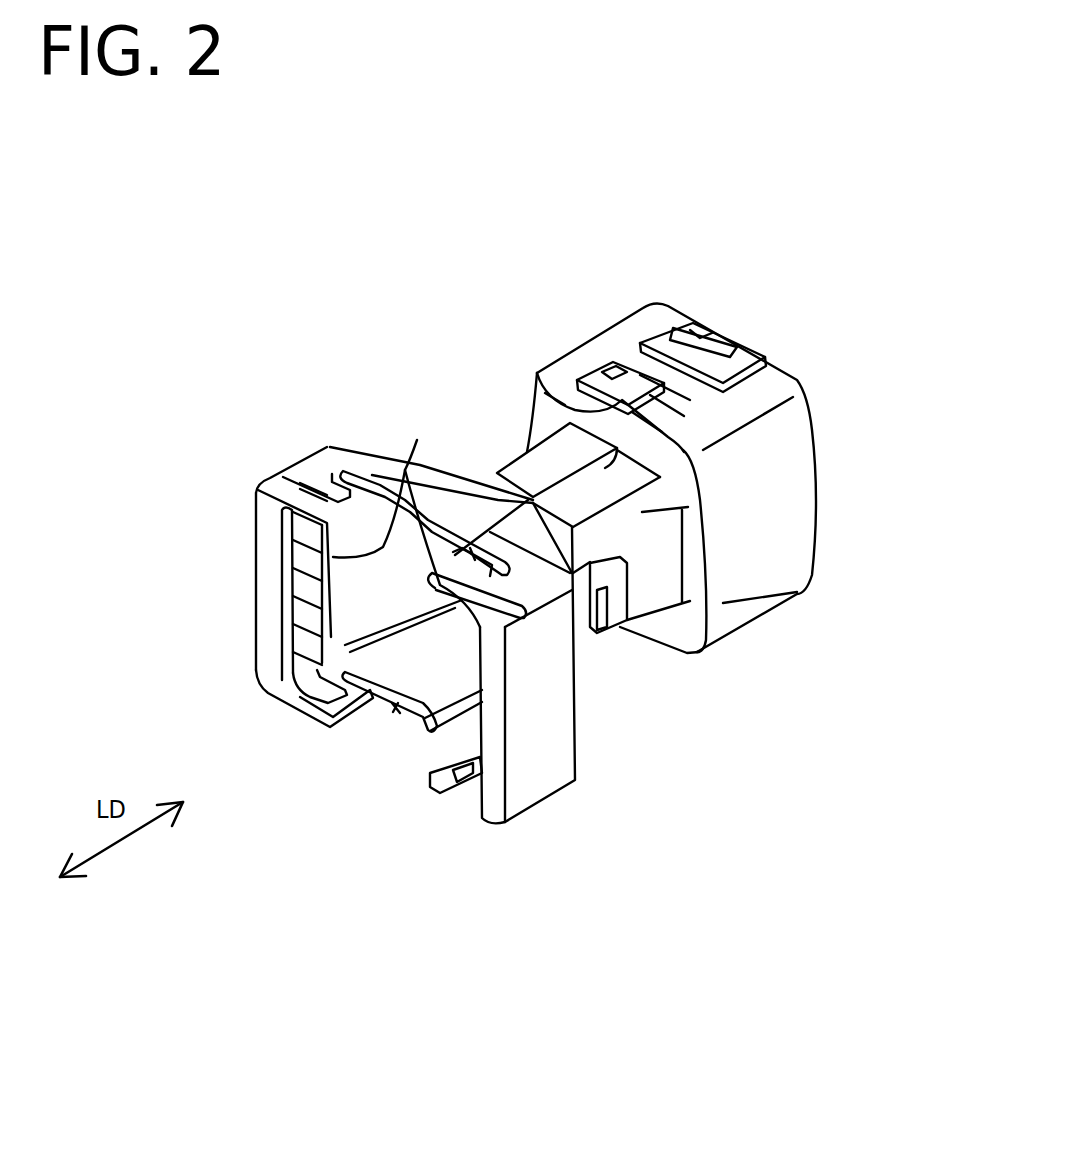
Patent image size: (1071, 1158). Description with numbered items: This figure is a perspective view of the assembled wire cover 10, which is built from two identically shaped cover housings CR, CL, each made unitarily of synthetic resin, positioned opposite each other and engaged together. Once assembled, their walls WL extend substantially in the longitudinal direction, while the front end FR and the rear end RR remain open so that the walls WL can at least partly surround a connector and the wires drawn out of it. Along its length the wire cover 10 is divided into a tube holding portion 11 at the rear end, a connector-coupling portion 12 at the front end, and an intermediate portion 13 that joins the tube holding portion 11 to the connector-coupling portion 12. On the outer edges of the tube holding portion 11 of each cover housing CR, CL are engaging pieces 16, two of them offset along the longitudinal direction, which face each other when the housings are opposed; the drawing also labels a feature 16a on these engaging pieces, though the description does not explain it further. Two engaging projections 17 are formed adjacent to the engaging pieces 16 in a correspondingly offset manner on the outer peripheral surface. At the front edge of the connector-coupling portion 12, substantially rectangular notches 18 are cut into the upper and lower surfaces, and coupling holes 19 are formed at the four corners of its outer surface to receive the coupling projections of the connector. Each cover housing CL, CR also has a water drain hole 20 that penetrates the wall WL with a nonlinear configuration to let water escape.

The wire cover 10 is at (748, 179).
The tube holding portion 11 is at (775, 527).
The connector-coupling portion 12 is at (547, 773).
The intermediate portion 13 is at (520, 460).
The engaging piece 16 is at (653, 311).
The lock projection 16a is at (535, 373).
The engaging projection 17 is at (618, 373).
The notch 18 is at (333, 557).
The coupling hole 19 is at (317, 493).
The water drain hole 20 is at (613, 630).
The cover housing CL is at (720, 604).
The cover housing CR is at (590, 343).
The rear end RR is at (663, 310).
The front end FR is at (257, 538).
The wall WL is at (550, 730).